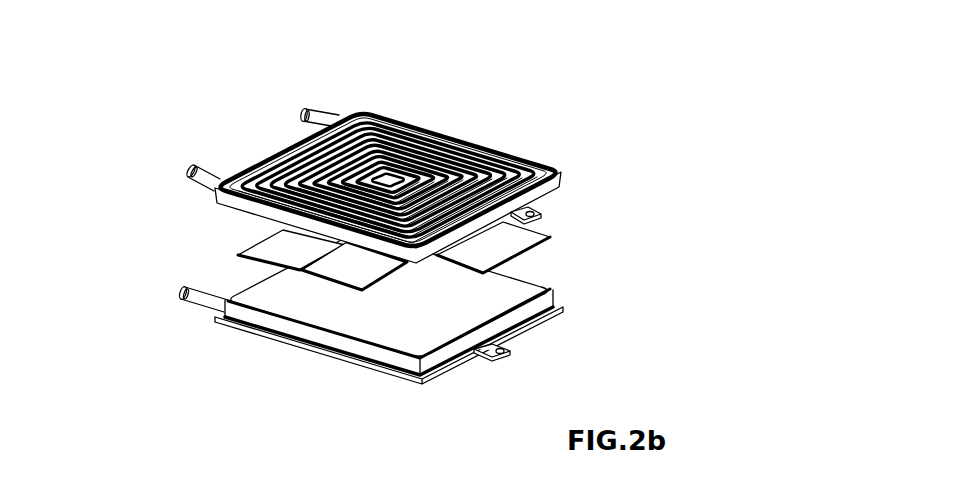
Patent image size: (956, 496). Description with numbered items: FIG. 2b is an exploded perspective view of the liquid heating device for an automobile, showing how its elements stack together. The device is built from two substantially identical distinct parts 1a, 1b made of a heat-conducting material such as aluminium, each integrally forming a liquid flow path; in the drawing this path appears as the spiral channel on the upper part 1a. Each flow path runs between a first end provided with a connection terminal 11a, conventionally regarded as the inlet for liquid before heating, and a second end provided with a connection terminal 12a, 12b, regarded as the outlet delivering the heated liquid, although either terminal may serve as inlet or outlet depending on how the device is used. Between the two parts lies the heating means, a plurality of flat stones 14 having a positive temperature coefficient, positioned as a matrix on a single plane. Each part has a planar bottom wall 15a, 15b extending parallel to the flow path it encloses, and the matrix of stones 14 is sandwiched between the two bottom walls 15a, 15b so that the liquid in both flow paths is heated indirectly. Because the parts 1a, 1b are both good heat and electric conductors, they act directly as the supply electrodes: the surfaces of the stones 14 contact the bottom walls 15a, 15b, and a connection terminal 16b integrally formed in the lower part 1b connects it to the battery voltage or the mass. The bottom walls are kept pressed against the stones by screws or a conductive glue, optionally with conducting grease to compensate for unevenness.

The part 1a is at (362, 167).
The part 1b is at (382, 309).
The connection terminal 11a is at (313, 110).
The connection terminal 12a is at (195, 166).
The connection terminal 12b is at (190, 290).
The flat stones having a positive temperature coefficient 14 is at (260, 245).
The bottom wall 15a is at (543, 203).
The bottom wall 15b is at (510, 300).
The connection terminal 16b is at (513, 353).